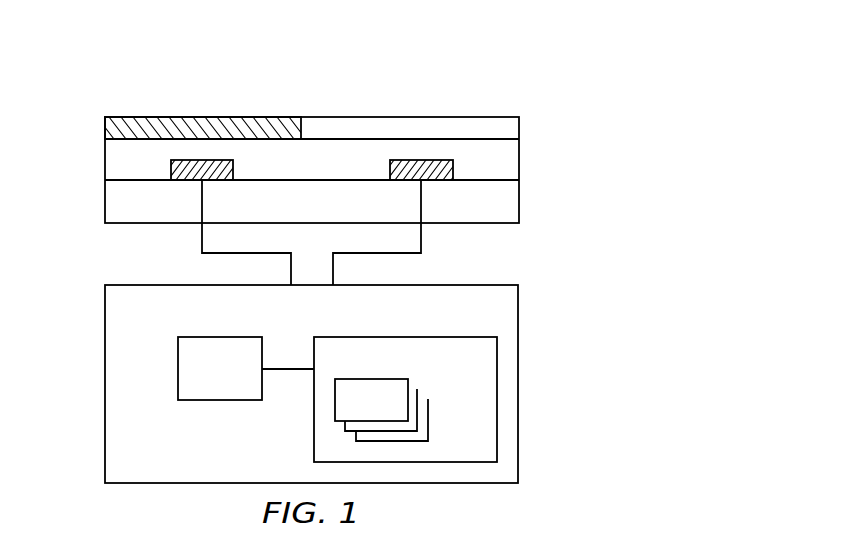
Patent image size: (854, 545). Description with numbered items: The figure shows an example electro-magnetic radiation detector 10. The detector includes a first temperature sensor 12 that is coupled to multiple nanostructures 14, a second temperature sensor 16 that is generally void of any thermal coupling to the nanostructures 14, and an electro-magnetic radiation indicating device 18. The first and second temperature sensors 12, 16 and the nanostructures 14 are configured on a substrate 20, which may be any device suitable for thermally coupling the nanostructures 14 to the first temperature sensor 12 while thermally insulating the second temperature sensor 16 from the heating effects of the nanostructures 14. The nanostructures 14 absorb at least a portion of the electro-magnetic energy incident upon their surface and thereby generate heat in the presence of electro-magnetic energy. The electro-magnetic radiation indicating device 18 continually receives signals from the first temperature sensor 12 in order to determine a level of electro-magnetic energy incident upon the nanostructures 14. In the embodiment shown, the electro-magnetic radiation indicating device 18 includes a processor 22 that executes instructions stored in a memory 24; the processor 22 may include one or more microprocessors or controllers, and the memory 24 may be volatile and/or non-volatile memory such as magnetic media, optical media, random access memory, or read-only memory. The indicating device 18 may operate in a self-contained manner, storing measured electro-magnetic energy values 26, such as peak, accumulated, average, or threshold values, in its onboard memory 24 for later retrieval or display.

The electro-magnetic radiation detector 10 is at (404, 96).
The first temperature sensor 12 is at (171, 168).
The nanostructures 14 is at (205, 124).
The second temperature sensor 16 is at (453, 168).
The electro-magnetic radiation indicating device 18 is at (99, 307).
The substrate 20 is at (452, 224).
The processor 22 is at (177, 355).
The memory 24 is at (313, 421).
The measured electro-magnetic energy values 26 is at (429, 421).